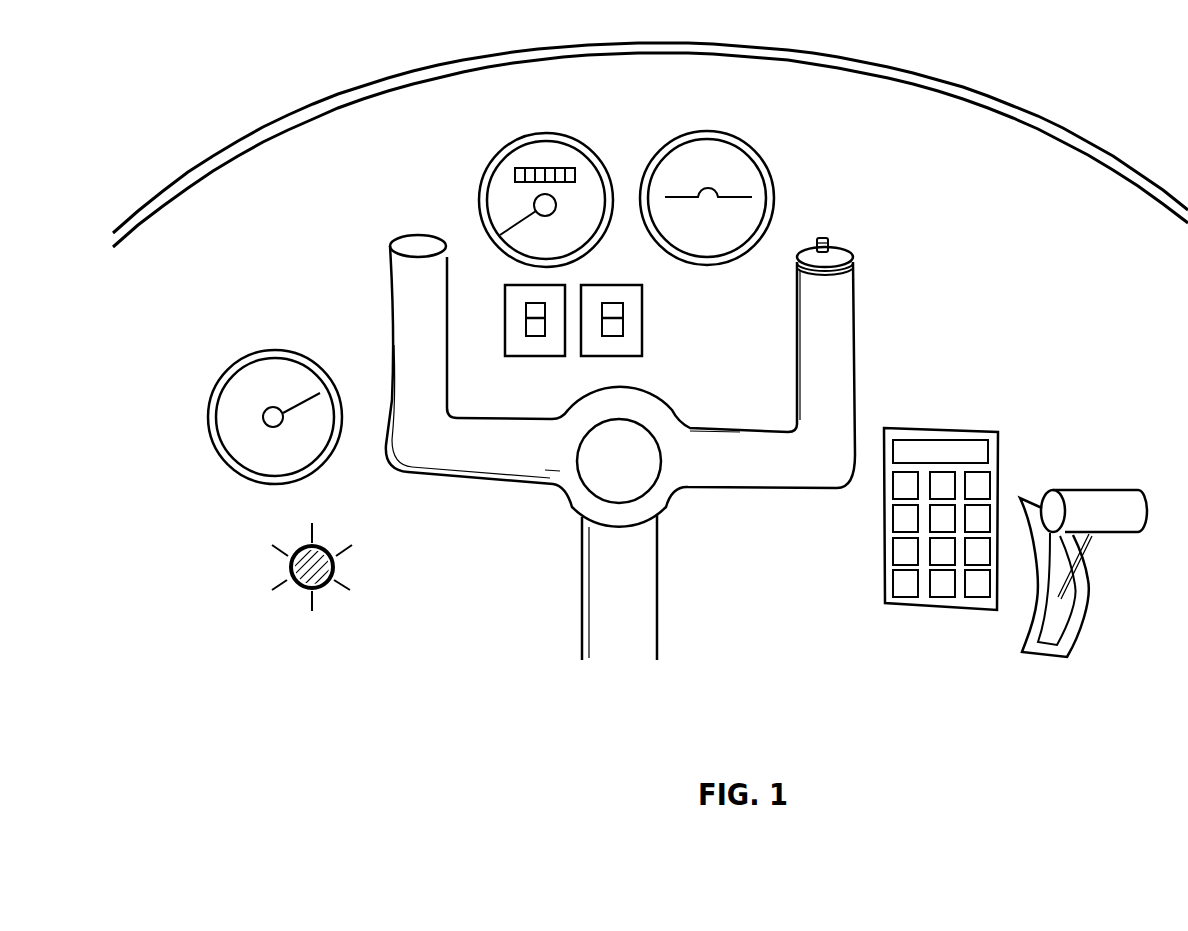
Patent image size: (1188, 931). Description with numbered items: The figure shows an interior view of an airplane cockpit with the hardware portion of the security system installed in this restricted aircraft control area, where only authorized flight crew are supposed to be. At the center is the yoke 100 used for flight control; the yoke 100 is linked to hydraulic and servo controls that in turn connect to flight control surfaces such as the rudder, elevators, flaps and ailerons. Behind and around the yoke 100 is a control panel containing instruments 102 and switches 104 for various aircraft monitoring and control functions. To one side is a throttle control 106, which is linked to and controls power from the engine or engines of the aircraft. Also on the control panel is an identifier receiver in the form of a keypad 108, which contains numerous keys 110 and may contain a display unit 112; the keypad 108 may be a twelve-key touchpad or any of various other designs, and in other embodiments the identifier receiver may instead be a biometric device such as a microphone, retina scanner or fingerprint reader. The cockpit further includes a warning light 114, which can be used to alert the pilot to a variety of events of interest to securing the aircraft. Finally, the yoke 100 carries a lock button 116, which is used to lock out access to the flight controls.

The yoke 100 is at (838, 337).
The instruments 102 is at (578, 140).
The switches 104 is at (633, 333).
The throttle control 106 is at (1082, 582).
The keypad 108 is at (970, 520).
The keys 110 is at (897, 597).
The display unit 112 is at (927, 438).
The warning light 114 is at (328, 580).
The lock button 116 is at (826, 237).